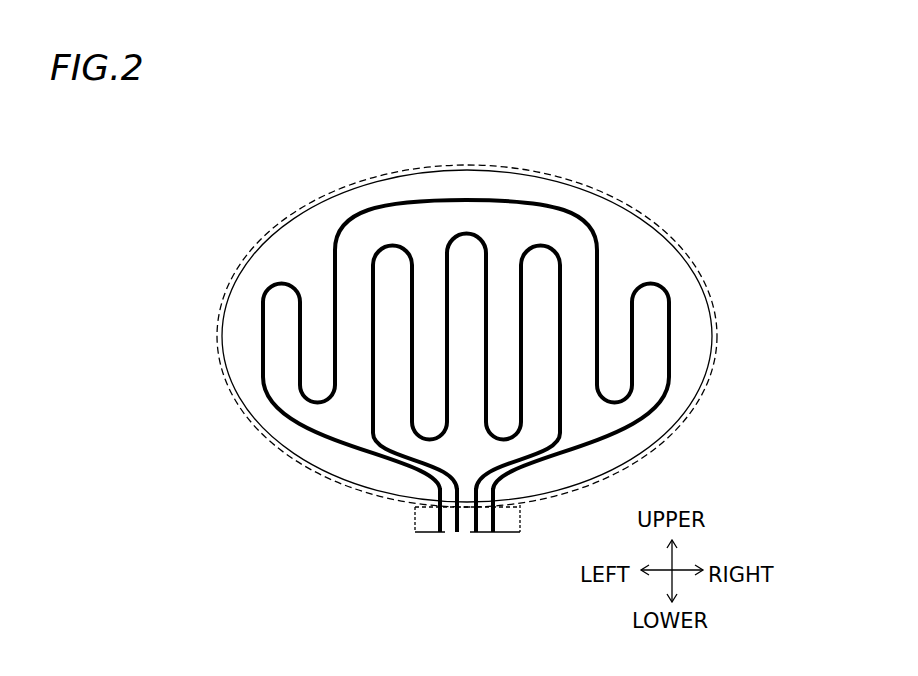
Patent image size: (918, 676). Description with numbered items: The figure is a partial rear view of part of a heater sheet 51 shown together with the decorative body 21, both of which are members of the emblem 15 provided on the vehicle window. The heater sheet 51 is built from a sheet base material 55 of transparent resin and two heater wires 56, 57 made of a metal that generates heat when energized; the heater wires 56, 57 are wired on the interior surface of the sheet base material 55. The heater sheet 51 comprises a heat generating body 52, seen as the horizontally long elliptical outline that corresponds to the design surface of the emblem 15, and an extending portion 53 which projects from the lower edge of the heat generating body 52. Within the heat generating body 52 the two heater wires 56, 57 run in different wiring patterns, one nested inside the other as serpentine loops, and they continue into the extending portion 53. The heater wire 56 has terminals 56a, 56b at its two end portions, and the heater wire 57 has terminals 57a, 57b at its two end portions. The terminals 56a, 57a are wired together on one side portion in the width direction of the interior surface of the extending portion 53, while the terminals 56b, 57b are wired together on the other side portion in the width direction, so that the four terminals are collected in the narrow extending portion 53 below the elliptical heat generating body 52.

The decorative body 21 is at (467, 328).
The emblem 15 is at (378, 177).
The sheet base material 55 is at (673, 263).
The heater sheet 51 is at (388, 522).
The heat generating body 52 is at (364, 483).
The extending portion 53 is at (415, 510).
The heater wire 56 is at (568, 217).
The heater wire 57 is at (462, 232).
The terminal 56a is at (440, 531).
The terminal 56b is at (494, 531).
The terminal 57a is at (456, 531).
The terminal 57b is at (476, 532).